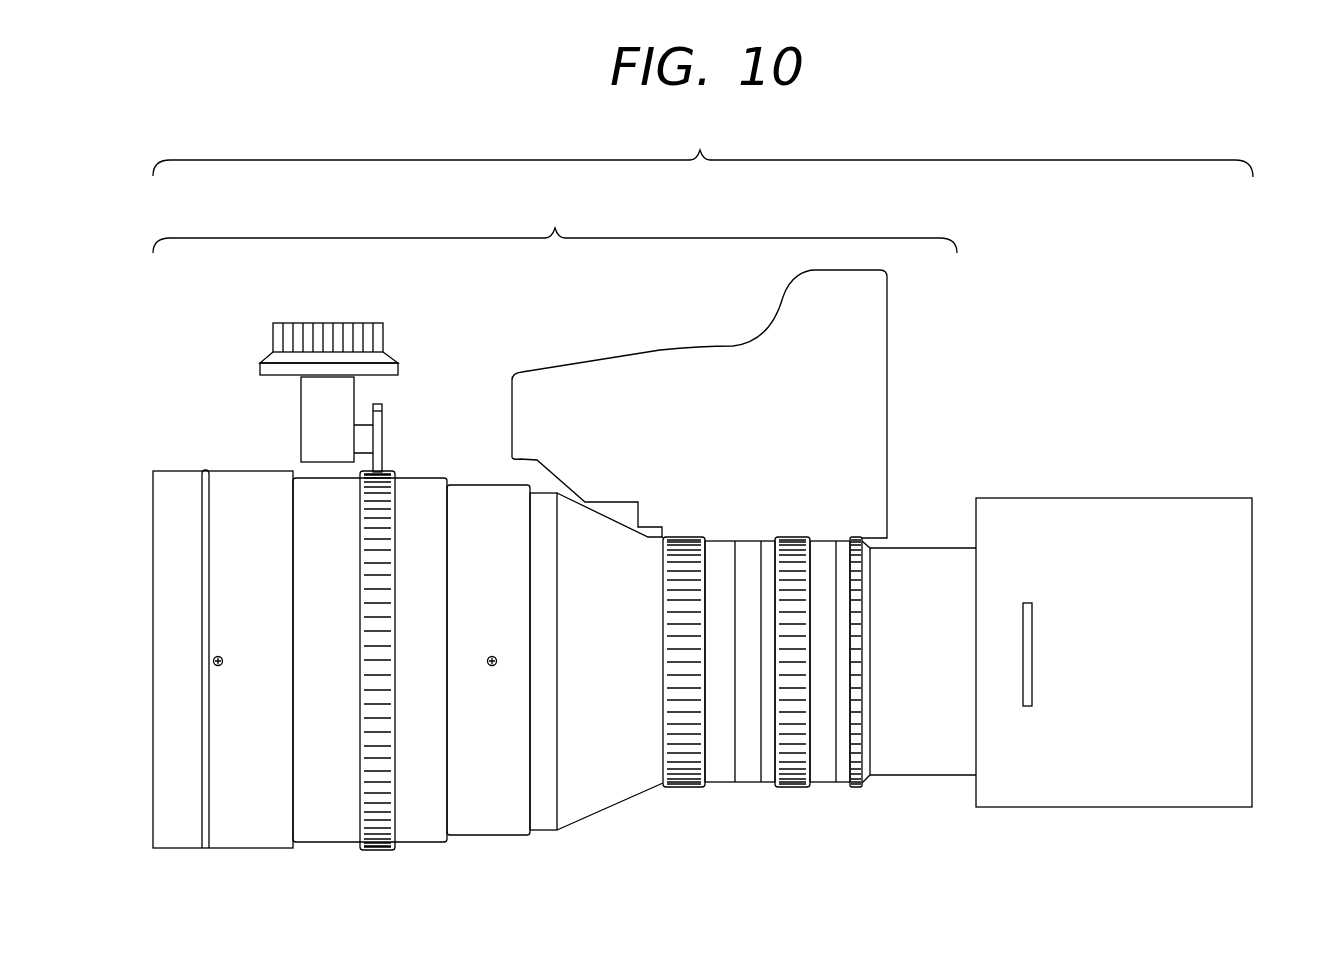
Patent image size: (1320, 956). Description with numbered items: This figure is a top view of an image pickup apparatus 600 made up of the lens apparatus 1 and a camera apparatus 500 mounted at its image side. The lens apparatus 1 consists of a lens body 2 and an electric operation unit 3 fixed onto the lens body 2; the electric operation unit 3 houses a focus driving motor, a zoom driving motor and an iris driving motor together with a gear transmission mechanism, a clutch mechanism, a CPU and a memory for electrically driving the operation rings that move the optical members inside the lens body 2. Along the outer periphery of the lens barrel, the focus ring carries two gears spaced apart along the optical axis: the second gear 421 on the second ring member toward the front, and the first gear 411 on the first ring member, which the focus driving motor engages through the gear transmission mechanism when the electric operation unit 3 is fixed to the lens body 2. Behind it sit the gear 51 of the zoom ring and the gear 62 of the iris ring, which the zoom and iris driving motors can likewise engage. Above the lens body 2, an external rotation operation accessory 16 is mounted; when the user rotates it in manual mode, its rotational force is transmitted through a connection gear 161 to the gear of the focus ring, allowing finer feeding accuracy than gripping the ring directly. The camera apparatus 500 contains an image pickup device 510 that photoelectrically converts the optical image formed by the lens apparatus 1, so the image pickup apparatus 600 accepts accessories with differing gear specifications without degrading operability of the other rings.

The image pickup apparatus 600 is at (703, 148).
The lens apparatus 1 is at (555, 225).
The lens body 2 is at (244, 482).
The electric operation unit 3 is at (686, 366).
The rotation operation accessory 16 is at (386, 356).
The connection gear 161 is at (380, 432).
The second gear 421 is at (377, 840).
The first gear 411 is at (684, 790).
The gear of the zoom ring 51 is at (794, 790).
The gear of the iris ring 62 is at (856, 790).
The camera apparatus 500 is at (1116, 512).
The image pickup device 510 is at (1028, 708).